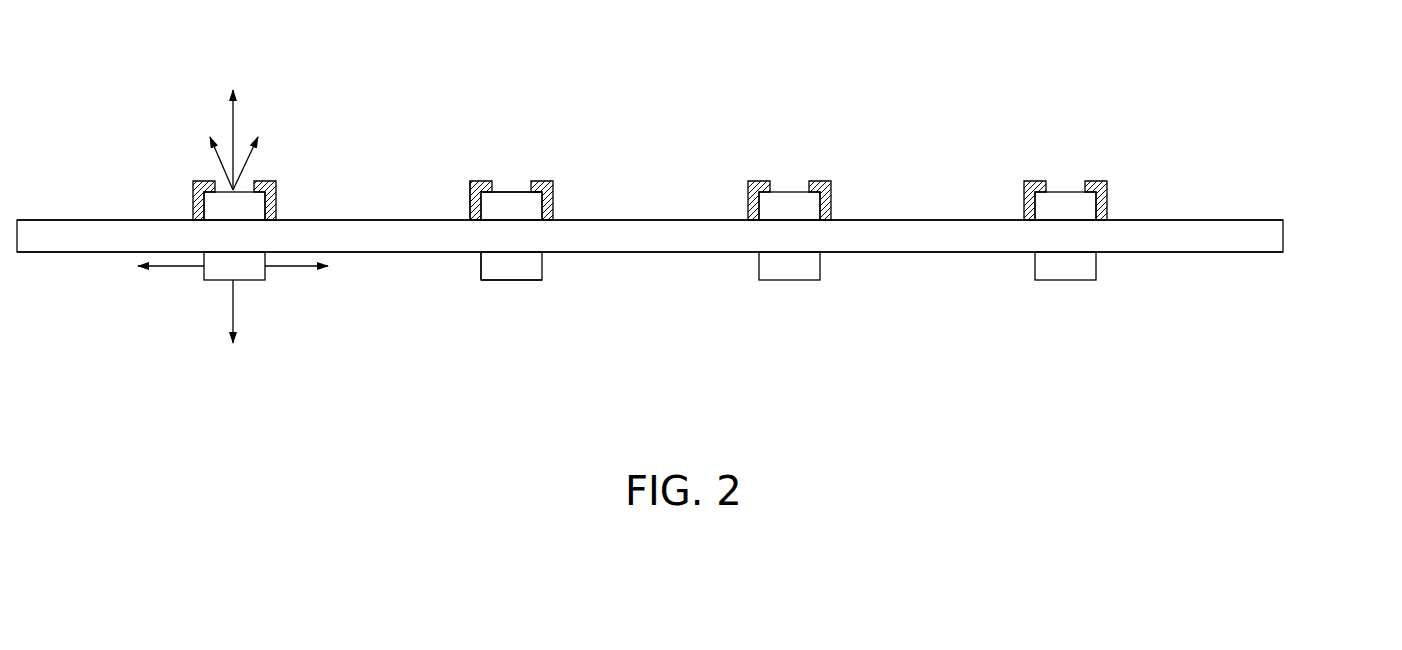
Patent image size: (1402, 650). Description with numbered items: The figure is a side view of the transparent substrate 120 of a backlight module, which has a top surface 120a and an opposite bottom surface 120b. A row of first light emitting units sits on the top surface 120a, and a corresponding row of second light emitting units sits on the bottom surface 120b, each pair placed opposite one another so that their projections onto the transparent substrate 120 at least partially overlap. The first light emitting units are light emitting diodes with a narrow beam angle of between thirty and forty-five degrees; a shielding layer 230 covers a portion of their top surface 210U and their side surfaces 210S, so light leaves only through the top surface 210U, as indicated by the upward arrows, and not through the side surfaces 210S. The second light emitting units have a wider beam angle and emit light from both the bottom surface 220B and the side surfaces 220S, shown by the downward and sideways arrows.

The transparent substrate 120 is at (1285, 236).
The top surface 120a is at (1252, 220).
The bottom surface 120b is at (1252, 252).
The top surface 210U is at (513, 190).
The side surfaces 210S is at (470, 208).
The side surfaces 220S is at (481, 263).
The bottom surface 220B is at (508, 282).
The shielding layer 230 is at (268, 182).